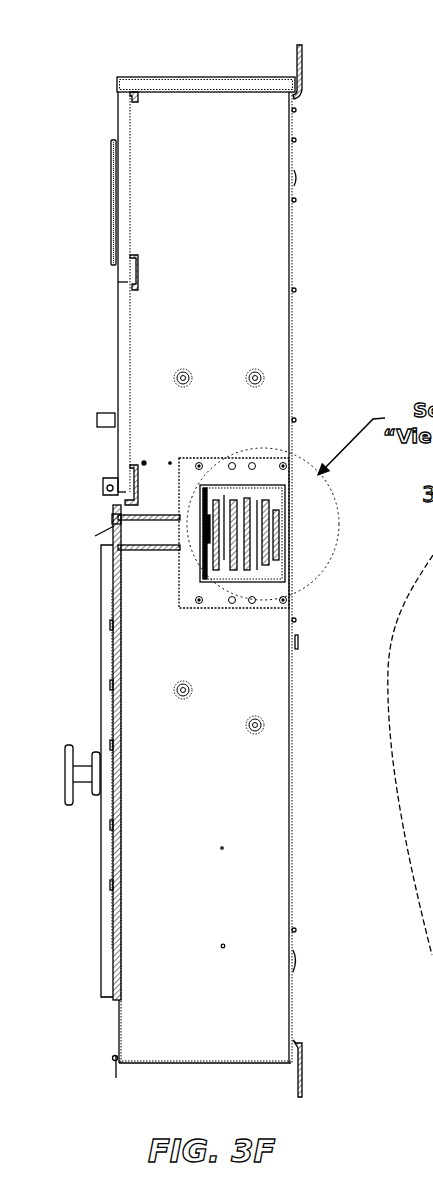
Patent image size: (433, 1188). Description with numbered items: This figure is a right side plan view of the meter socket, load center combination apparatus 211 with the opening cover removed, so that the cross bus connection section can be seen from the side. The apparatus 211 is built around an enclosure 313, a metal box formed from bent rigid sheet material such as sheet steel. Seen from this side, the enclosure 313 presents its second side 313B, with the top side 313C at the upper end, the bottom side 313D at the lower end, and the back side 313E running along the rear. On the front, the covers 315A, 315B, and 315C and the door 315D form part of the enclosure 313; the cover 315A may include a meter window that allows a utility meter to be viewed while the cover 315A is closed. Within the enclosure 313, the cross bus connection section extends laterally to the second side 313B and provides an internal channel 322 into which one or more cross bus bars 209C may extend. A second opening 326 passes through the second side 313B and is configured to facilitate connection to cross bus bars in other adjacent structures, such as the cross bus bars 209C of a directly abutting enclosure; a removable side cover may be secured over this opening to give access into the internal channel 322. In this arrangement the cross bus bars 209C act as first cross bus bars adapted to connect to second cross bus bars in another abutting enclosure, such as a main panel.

The meter socket, load center combination apparatus 211 is at (319, 58).
The enclosure 313 is at (306, 210).
The second side 313B is at (260, 870).
The top side 313C is at (201, 77).
The bottom side 313D is at (136, 1063).
The back side 313E is at (295, 333).
The cover 315A is at (120, 172).
The cover 315B is at (125, 352).
The cover 315C is at (118, 1018).
The door 315D is at (100, 720).
The internal channel 322 is at (238, 482).
The second opening 326 is at (245, 582).
The cross bus bars 209C is at (432, 683).